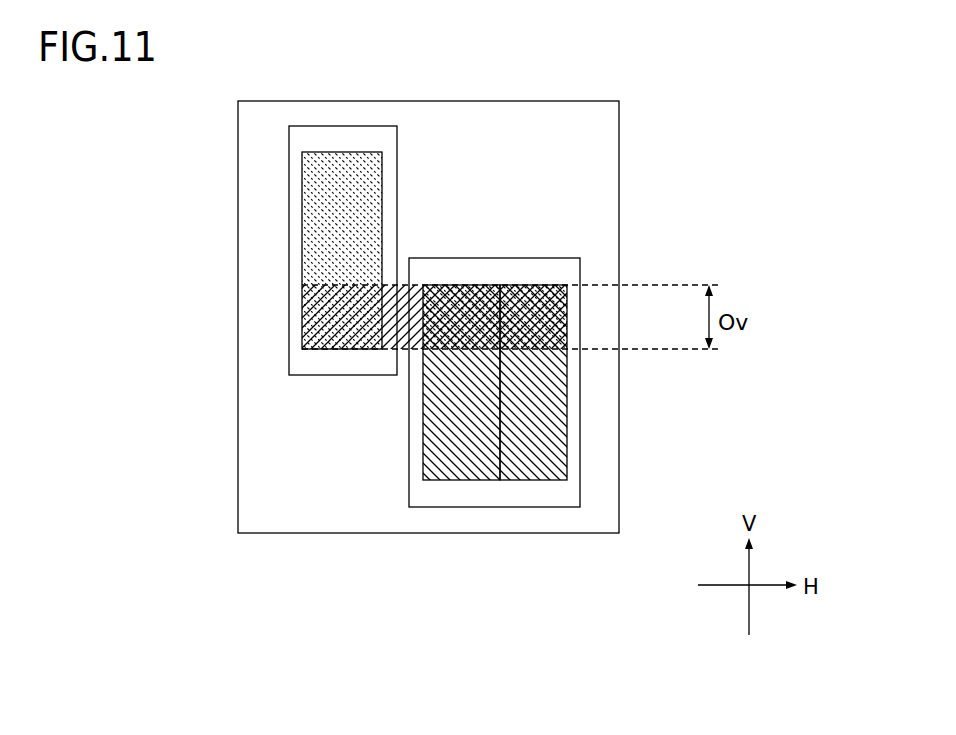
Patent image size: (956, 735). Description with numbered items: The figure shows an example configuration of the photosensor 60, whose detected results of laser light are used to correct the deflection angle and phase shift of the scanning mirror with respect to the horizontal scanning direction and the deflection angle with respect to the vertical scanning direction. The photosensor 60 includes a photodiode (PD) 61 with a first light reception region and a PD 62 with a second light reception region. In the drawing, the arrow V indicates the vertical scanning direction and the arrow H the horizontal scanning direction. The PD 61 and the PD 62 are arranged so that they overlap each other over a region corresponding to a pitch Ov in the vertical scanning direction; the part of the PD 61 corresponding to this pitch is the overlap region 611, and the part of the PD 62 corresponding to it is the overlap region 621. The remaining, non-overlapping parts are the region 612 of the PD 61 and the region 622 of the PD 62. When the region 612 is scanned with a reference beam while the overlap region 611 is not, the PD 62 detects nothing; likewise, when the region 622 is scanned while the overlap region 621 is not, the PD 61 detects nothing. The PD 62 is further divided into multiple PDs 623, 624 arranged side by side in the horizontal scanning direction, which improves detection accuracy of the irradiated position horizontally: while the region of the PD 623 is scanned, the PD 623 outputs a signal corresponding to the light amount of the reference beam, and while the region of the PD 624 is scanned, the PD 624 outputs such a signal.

The photosensor 60 is at (566, 99).
The photodiode (PD) 61 is at (342, 152).
The PD 62 is at (493, 285).
The overlap region 611 is at (289, 286).
The region 612 is at (289, 152).
The overlap region 621 is at (582, 285).
The region 622 is at (582, 350).
The PD 623 is at (458, 488).
The PD 624 is at (530, 488).